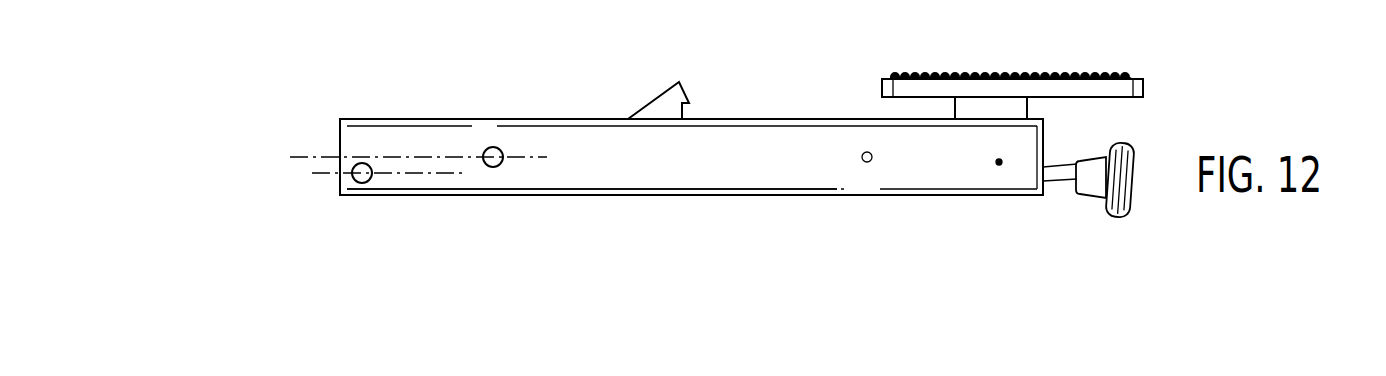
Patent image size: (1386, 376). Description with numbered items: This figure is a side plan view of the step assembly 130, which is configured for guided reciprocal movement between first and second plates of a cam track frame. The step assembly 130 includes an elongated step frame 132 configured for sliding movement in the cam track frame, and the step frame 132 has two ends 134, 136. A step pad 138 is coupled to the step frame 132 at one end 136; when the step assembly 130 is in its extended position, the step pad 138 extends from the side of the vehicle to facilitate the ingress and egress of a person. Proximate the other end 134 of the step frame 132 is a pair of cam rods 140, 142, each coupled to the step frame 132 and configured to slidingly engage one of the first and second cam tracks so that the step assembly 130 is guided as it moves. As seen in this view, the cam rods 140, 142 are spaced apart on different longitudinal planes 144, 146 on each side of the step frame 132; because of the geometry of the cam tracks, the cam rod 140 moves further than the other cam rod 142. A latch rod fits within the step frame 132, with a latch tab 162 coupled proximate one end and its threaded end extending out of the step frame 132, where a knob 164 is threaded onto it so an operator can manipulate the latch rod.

The step assembly 130 is at (788, 92).
The step frame 132 is at (692, 197).
The end of step frame 134 is at (358, 80).
The end of step frame 136 is at (1034, 213).
The step pad 138 is at (1145, 90).
The cam rod 140 is at (362, 183).
The cam rod 142 is at (492, 167).
The longitudinal plane 144 is at (323, 176).
The longitudinal plane 146 is at (310, 157).
The latch tab 162 is at (652, 97).
The knob 164 is at (1087, 195).